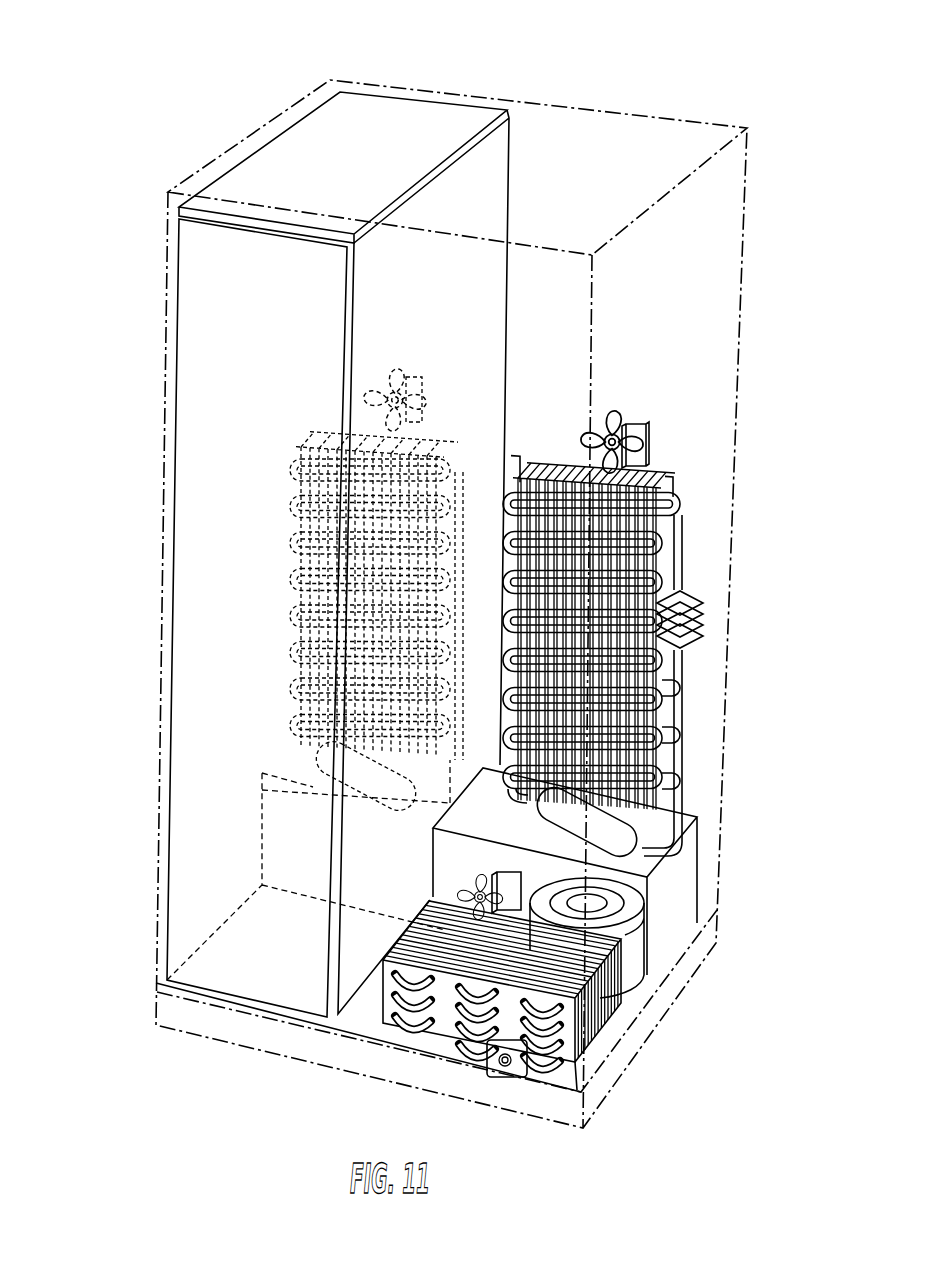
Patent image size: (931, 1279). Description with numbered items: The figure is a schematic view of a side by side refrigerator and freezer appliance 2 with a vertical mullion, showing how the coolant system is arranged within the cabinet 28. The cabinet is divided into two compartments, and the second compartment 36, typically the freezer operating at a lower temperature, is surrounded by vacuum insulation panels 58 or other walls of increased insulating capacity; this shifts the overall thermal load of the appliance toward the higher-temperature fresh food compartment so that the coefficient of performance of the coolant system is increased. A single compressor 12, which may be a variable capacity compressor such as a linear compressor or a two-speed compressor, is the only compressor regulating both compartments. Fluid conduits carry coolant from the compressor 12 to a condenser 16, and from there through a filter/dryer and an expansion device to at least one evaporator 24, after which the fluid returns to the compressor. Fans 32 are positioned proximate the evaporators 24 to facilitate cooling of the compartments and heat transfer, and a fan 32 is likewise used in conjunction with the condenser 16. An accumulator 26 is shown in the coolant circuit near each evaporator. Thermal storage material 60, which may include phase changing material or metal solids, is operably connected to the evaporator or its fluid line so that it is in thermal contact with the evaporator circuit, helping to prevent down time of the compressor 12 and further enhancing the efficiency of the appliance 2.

The appliance 2 is at (171, 131).
The cabinet 28 is at (535, 104).
The vacuum insulation panels 58 is at (359, 169).
The second compartment 36 is at (253, 440).
The fans 32 is at (618, 417).
The evaporator 24 is at (441, 448).
The accumulator 26 is at (603, 823).
The thermal storage material 60 is at (702, 621).
The compressor 12 is at (638, 948).
The condenser 16 is at (605, 1003).